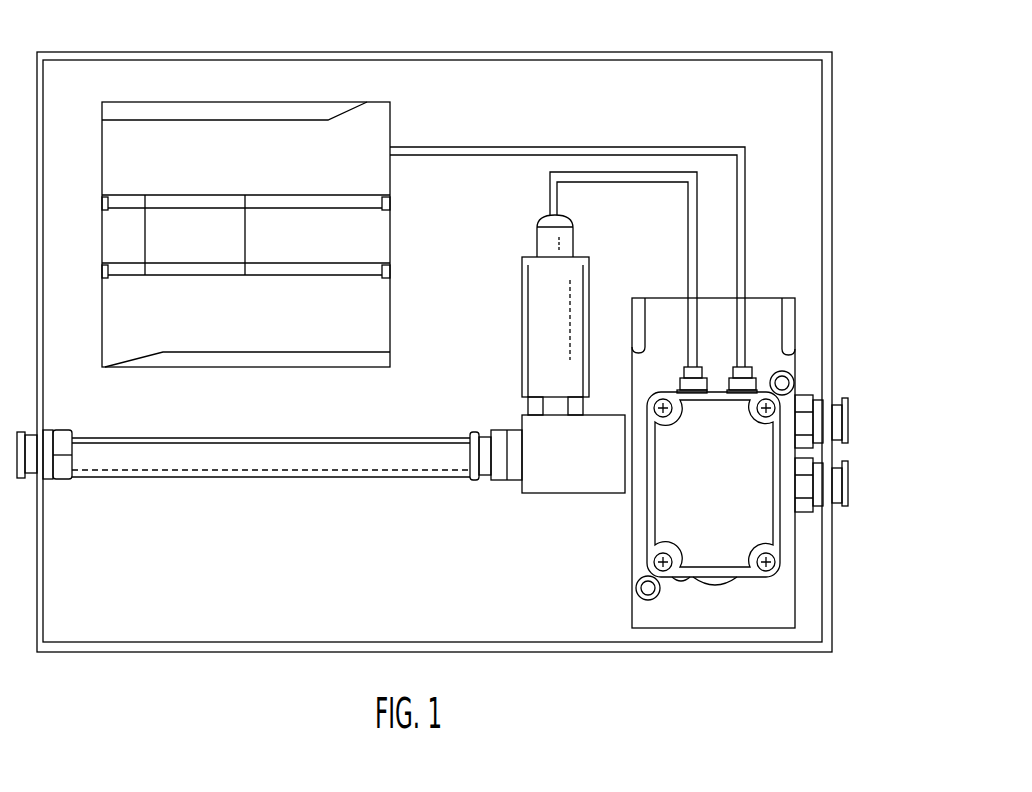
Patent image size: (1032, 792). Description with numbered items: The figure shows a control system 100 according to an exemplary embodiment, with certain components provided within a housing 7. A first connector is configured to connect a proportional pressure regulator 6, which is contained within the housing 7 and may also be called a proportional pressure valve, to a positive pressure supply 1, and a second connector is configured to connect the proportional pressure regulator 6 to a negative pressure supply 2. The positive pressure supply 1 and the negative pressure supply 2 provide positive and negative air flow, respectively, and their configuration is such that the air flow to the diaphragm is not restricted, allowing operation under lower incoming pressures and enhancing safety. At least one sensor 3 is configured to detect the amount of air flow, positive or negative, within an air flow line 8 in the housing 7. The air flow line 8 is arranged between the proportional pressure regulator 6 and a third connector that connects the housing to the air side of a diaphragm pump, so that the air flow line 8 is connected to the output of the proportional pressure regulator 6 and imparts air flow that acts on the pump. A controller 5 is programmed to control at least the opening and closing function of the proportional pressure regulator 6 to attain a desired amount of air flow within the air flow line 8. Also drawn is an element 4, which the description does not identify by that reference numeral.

The system 100 is at (90, 40).
The positive pressure supply 1 is at (837, 422).
The negative pressure supply 2 is at (837, 485).
The sensor 3 is at (573, 227).
The flow tube 4 is at (63, 443).
The controller 5 is at (390, 120).
The proportional pressure regulator 6 is at (762, 298).
The housing 7 is at (810, 583).
The air flow line 8 is at (450, 452).